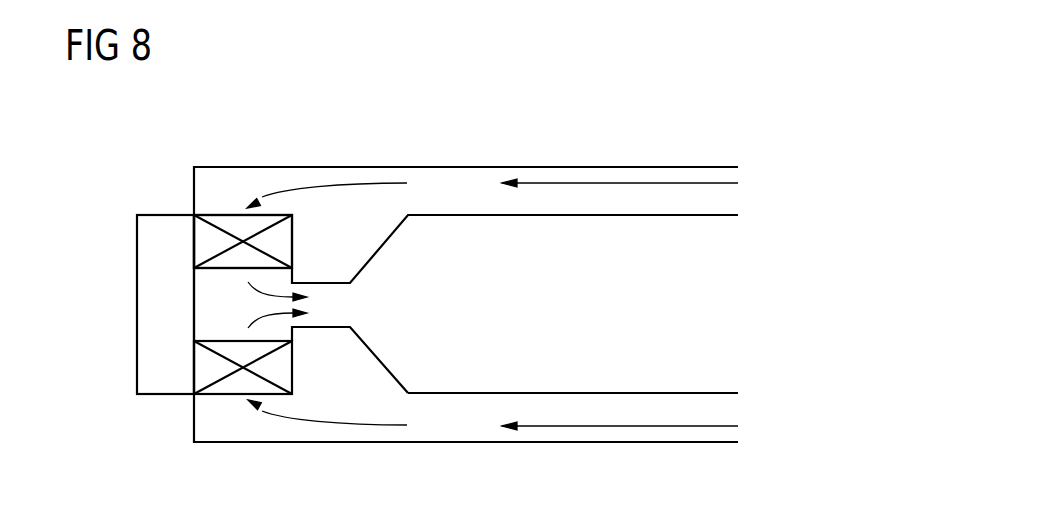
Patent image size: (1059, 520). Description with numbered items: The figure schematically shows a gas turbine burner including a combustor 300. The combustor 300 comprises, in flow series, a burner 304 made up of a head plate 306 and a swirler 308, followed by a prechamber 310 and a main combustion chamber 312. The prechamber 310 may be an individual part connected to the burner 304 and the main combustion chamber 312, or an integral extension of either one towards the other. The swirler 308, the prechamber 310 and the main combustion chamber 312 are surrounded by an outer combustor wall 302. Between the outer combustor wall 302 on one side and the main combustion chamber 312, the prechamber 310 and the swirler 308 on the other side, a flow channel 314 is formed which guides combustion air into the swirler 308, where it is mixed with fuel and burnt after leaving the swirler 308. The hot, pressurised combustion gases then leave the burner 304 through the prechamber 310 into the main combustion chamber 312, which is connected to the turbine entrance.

The combustor 300 is at (548, 122).
The outer combustor wall 302 is at (653, 167).
The burner 304 is at (157, 190).
The head plate 306 is at (145, 303).
The swirler 308 is at (283, 242).
The prechamber 310 is at (329, 313).
The main combustion chamber 312 is at (445, 382).
The flow channel 314 is at (460, 177).